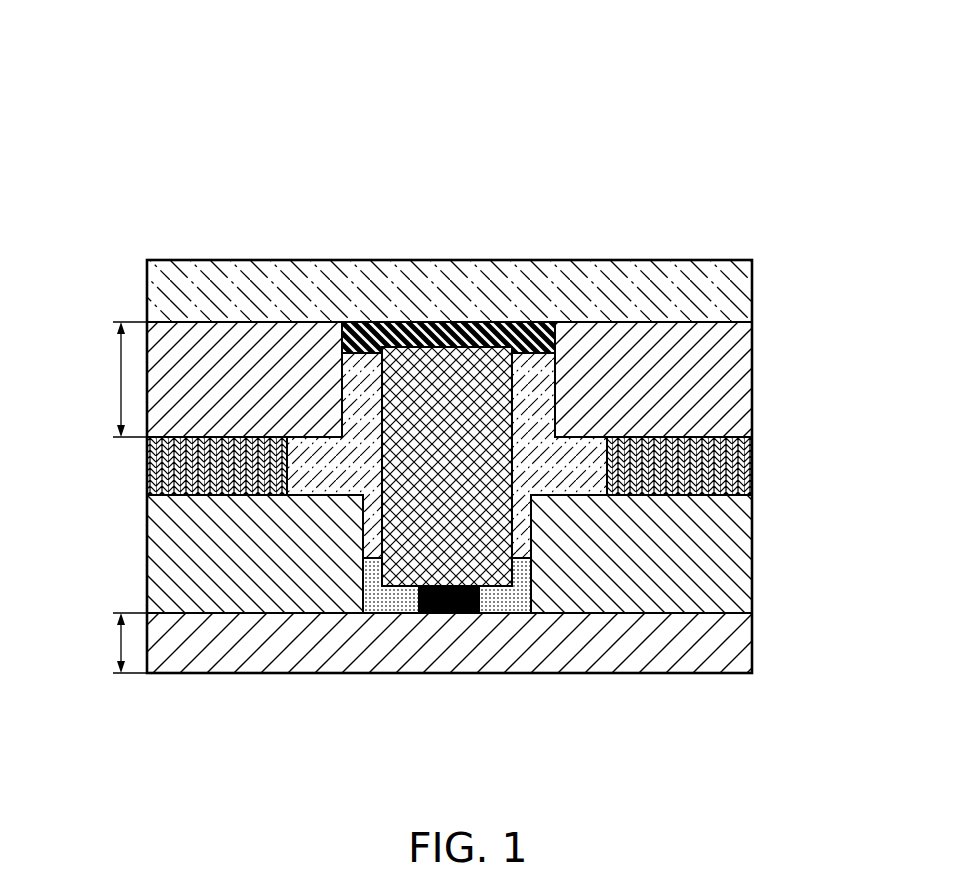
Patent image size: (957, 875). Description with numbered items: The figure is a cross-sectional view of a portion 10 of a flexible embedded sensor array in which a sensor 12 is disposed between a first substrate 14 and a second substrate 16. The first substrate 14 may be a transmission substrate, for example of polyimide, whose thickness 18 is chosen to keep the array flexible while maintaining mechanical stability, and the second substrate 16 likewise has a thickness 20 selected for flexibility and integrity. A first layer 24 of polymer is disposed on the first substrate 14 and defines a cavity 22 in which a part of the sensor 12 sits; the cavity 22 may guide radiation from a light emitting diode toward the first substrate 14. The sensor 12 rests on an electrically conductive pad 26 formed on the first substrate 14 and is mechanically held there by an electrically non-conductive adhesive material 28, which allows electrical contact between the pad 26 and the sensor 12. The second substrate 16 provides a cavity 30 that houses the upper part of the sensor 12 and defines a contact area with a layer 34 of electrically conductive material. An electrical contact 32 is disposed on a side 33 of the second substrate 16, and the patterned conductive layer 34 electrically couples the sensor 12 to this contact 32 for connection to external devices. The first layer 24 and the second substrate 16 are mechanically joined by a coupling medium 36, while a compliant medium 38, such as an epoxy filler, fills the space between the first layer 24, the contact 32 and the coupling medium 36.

The portion of a flexible embedded sensor array 10 is at (749, 74).
The sensor 12 is at (492, 545).
The first substrate 14 is at (752, 648).
The second substrate 16 is at (752, 398).
The thickness of the first substrate 18 is at (121, 640).
The thickness of the second substrate 20 is at (121, 390).
The cavity 22 is at (518, 530).
The first layer 24 is at (752, 547).
The electrically conductive pad 26 is at (453, 612).
The non-conductive adhesive material 28 is at (390, 598).
The cavity 30 is at (535, 407).
The electrical contact 32 is at (752, 290).
The side of the second substrate 33 is at (680, 321).
The electrically conductive material layer 34 is at (497, 333).
The coupling medium 36 is at (147, 465).
The compliant medium 38 is at (337, 368).